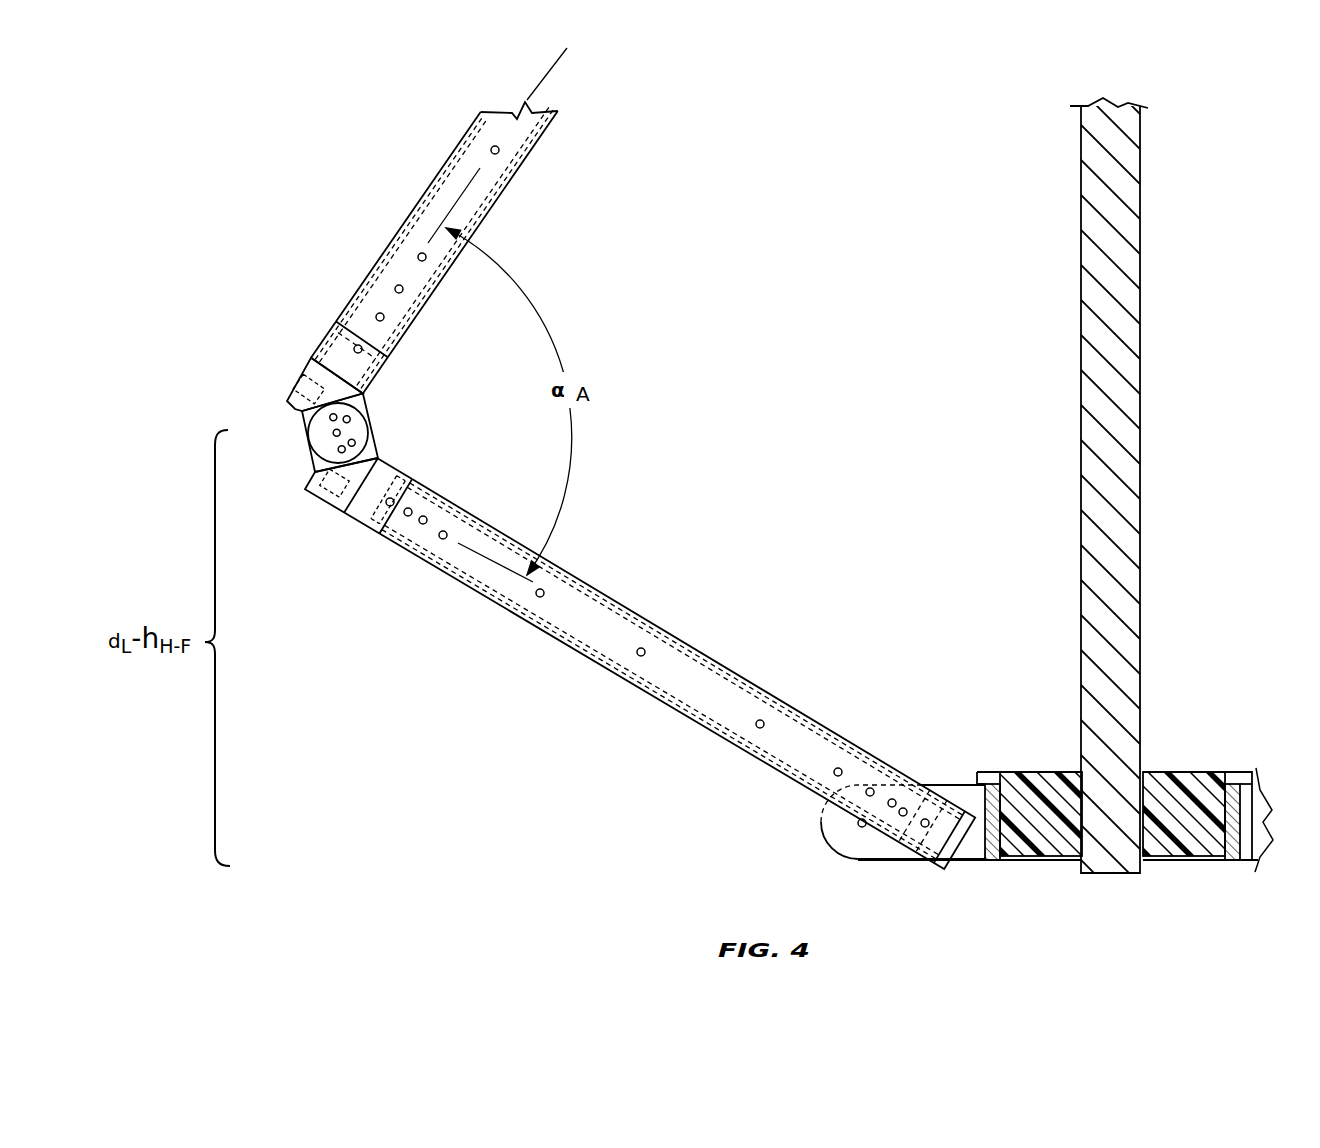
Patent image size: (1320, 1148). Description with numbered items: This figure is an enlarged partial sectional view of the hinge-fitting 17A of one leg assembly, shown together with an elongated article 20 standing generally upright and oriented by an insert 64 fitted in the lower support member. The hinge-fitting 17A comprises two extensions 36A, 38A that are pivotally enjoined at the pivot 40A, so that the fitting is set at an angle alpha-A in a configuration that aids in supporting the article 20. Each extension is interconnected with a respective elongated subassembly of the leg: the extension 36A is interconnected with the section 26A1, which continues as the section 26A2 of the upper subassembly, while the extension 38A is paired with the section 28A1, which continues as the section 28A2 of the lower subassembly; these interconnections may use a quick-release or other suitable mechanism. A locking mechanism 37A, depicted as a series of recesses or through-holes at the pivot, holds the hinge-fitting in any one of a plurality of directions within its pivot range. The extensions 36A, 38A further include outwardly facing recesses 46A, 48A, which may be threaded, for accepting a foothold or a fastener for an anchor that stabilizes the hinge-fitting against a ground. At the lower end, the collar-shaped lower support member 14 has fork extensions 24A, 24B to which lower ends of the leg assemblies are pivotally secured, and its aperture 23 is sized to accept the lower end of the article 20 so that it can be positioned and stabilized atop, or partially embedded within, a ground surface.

The lower support member 14 is at (1233, 861).
The hinge-fitting 17A is at (244, 424).
The article 20 is at (1080, 185).
The aperture 23 is at (1040, 861).
The fork extension 24A is at (963, 792).
The fork extension 24B is at (1250, 782).
The section 26A1 is at (390, 366).
The section 26A2 is at (536, 160).
The section 28A1 is at (410, 478).
The section 28A2 is at (733, 672).
The extension 36A is at (397, 320).
The locking mechanism 37A is at (358, 442).
The extension 38A is at (412, 521).
The pivot 40A is at (303, 422).
The outwardly facing recess 46A is at (300, 409).
The outwardly facing recess 48A is at (330, 493).
The insert 64 is at (1173, 782).